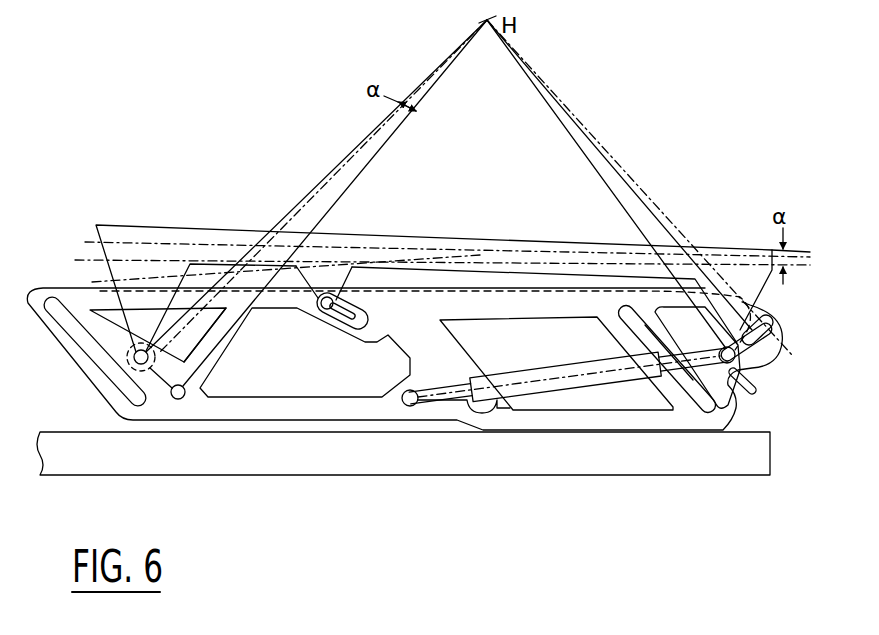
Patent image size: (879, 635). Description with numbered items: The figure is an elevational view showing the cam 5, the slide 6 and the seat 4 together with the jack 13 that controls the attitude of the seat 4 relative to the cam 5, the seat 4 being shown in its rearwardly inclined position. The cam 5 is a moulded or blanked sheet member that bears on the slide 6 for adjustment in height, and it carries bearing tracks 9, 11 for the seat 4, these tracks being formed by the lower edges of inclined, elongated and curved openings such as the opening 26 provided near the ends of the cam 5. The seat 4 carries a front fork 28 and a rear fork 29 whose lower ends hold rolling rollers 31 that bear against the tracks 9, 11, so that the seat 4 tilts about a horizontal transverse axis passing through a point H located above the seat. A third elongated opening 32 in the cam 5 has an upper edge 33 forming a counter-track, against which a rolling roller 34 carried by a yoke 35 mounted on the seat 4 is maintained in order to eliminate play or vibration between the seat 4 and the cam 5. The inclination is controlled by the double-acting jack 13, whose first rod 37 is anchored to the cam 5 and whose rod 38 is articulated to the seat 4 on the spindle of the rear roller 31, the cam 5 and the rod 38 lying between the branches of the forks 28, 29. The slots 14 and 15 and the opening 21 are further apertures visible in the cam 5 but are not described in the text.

The seat 4 is at (140, 226).
The cam 5 is at (55, 283).
The slide 6 is at (83, 463).
The bearing track 9 is at (176, 398).
The bearing track 11 is at (752, 344).
The jack 13 is at (578, 399).
The slot 14 is at (58, 318).
The slot 15 is at (708, 412).
The opening 21 is at (437, 348).
The elongated opening 26 is at (181, 400).
The front fork 28 is at (126, 320).
The rear fork 29 is at (768, 278).
The rolling roller 31 is at (152, 352).
The third elongated opening 32 is at (356, 322).
The upper edge (counter-track) 33 is at (345, 323).
The rolling roller 34 is at (323, 309).
The yoke 35 is at (340, 283).
The first rod 37 is at (441, 412).
The rod 38 is at (678, 378).